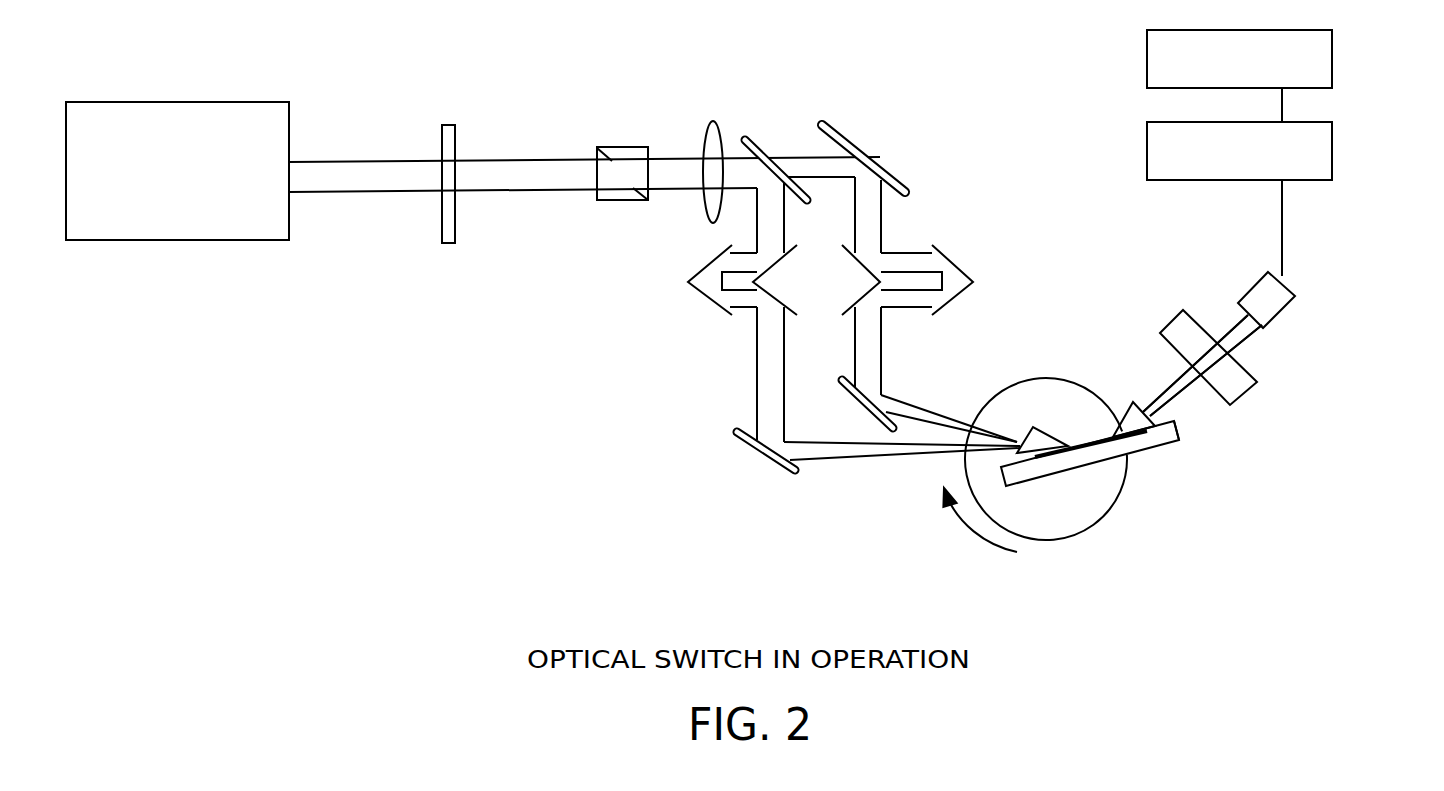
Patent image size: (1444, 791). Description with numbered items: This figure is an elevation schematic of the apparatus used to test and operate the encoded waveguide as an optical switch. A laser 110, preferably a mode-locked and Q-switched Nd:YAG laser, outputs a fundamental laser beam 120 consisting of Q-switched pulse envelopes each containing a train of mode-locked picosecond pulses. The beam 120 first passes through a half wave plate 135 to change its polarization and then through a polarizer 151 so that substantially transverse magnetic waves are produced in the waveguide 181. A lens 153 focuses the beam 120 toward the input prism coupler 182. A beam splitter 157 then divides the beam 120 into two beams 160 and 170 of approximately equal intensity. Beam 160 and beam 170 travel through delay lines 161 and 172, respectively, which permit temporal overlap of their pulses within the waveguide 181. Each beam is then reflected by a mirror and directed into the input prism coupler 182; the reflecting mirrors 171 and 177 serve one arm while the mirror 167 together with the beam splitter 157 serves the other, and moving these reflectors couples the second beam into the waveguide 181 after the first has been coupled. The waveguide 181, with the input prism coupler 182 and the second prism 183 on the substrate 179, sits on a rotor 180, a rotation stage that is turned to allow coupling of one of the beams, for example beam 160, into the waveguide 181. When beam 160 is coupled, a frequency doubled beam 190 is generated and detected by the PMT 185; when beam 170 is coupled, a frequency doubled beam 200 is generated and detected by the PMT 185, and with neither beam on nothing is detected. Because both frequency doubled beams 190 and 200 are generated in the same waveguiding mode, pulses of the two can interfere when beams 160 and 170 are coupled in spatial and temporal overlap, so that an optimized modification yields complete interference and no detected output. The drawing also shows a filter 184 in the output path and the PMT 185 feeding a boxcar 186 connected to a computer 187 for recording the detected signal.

The laser 110 is at (131, 101).
The laser beam 120 is at (317, 188).
The half wave plate 135 is at (448, 233).
The polarizer 151 is at (620, 147).
The lens 153 is at (714, 122).
The beam splitter 157 is at (747, 138).
The mirror 171 is at (880, 163).
The delay line 172 is at (957, 263).
The delay line 161 is at (707, 300).
The beam 160 is at (763, 370).
The beam 170 is at (875, 367).
The mirror 177 is at (858, 405).
The mirror 167 is at (797, 472).
The rotor 180 is at (1062, 525).
The waveguide 181 is at (1137, 440).
The substrate 179 is at (1178, 437).
The input prism coupler 182 is at (1040, 442).
The prism 183 is at (1140, 412).
The frequency doubled beam 190 is at (1240, 336).
The frequency doubled beam 200 is at (1285, 365).
The filter C 184 is at (1180, 331).
The PMT 185 is at (1273, 298).
The boxcar averager 186 is at (1332, 150).
The computer 187 is at (1332, 60).